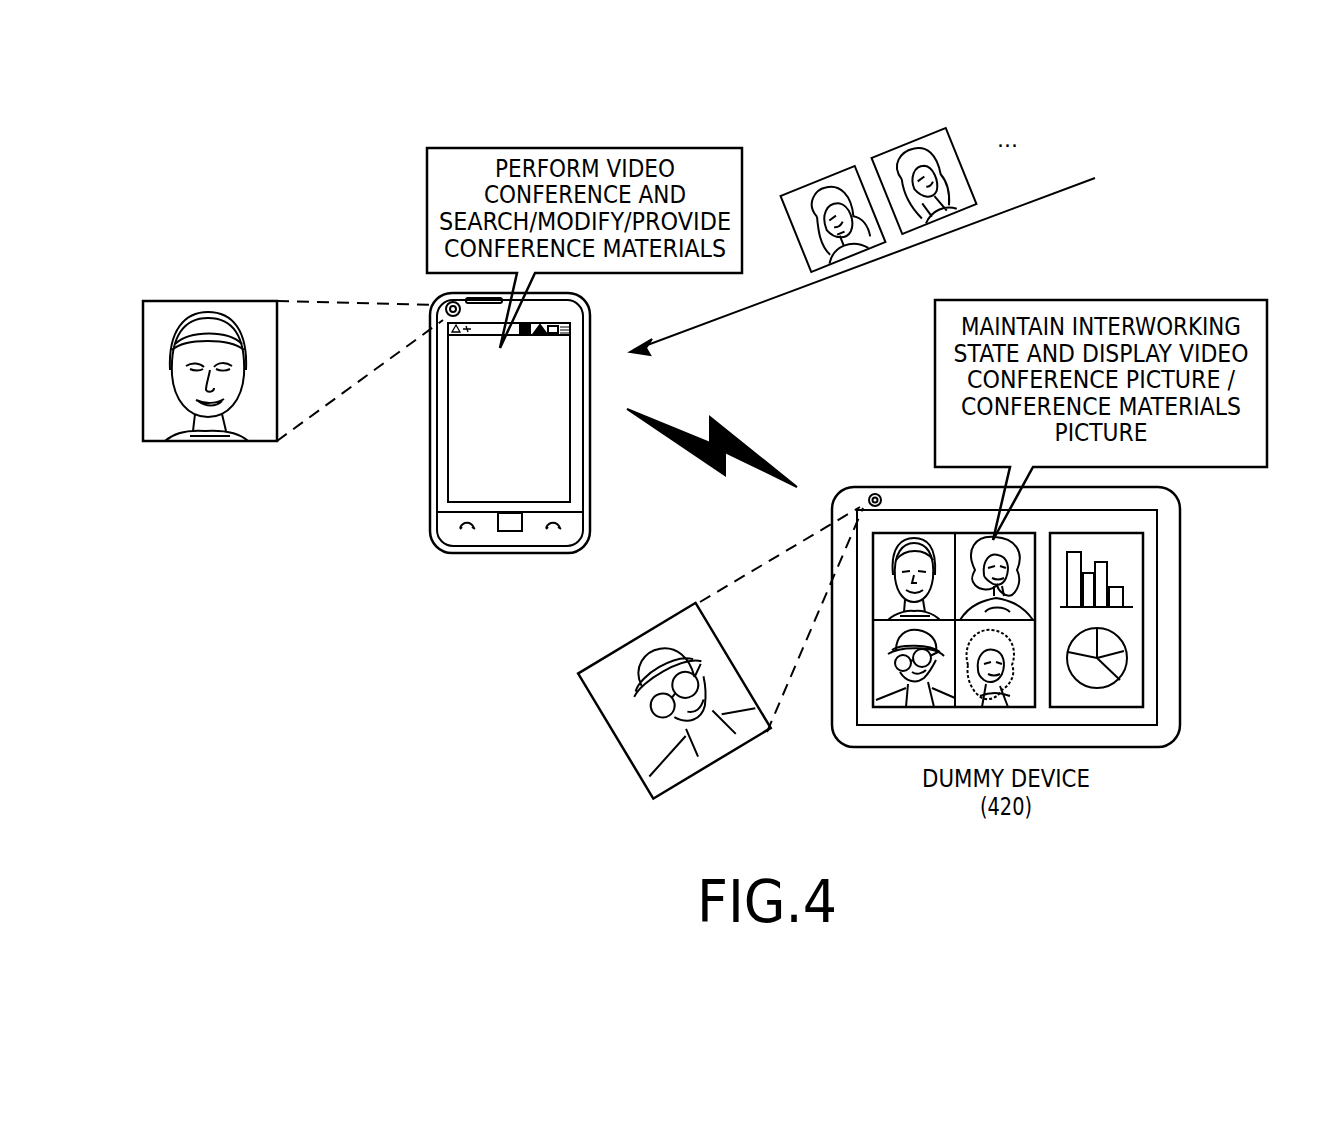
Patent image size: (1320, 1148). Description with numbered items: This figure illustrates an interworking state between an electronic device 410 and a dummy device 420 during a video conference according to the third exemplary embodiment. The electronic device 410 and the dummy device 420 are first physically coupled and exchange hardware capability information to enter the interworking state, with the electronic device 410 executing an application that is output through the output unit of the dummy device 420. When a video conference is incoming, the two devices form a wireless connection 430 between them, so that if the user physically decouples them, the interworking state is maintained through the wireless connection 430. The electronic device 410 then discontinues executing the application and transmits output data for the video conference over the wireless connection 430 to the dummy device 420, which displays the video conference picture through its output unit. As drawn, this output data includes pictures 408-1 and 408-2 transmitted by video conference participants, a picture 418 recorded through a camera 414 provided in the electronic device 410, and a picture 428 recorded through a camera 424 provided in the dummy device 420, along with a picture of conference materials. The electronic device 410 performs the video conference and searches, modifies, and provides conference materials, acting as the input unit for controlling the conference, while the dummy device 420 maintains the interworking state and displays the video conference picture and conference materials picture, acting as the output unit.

The picture transmitted by video conference participant 408-1 is at (828, 172).
The picture transmitted by video conference participant 408-2 is at (922, 135).
The electronic device 410 is at (510, 470).
The camera 414 is at (436, 302).
The picture recorded through camera of electronic device 418 is at (222, 300).
The dummy device 420 is at (1006, 617).
The camera 424 is at (875, 493).
The picture recorded through camera of dummy device 428 is at (612, 734).
The wireless connection 430 is at (772, 436).